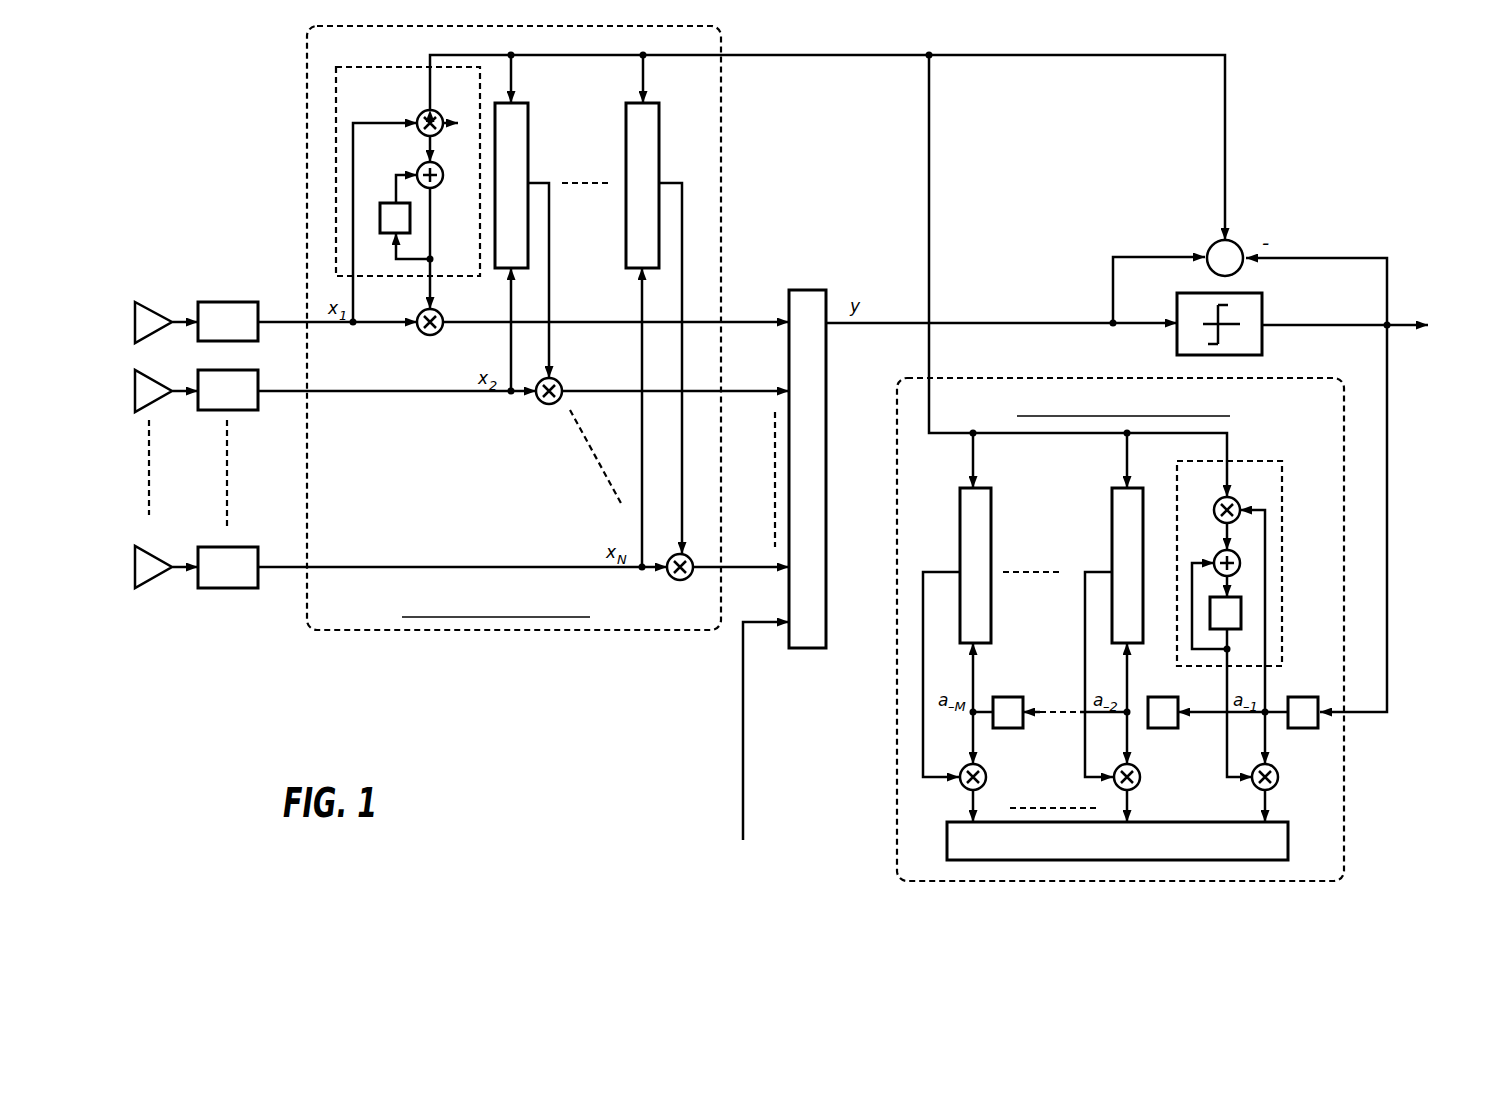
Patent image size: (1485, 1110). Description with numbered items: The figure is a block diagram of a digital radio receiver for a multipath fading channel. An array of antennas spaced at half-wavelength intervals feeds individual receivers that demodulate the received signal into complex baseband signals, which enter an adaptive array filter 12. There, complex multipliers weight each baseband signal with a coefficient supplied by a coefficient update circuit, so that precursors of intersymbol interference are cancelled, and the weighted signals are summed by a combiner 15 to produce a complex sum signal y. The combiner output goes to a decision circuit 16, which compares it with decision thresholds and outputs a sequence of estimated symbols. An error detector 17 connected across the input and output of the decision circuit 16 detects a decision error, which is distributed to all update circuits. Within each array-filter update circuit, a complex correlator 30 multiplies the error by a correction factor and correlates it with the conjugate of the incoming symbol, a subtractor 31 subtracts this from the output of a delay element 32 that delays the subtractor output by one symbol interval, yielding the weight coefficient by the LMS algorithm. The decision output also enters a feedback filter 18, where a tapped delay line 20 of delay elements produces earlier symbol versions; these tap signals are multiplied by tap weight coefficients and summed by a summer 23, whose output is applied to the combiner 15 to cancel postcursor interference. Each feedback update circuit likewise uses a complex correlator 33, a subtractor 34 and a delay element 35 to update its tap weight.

The adaptive array filter 12 is at (721, 178).
The combiner 15 is at (802, 290).
The decision circuit 16 is at (1262, 316).
The error detector 17 is at (1240, 244).
The feedback filter 18 is at (897, 426).
The tapped delay line 20 is at (1067, 672).
The summer 23 is at (947, 826).
The complex correlator 30 is at (418, 115).
The subtractor 31 is at (441, 167).
The delay element 32 is at (385, 202).
The complex correlator 33 is at (1240, 504).
The subtractor 34 is at (1242, 562).
The delay element 35 is at (1243, 612).